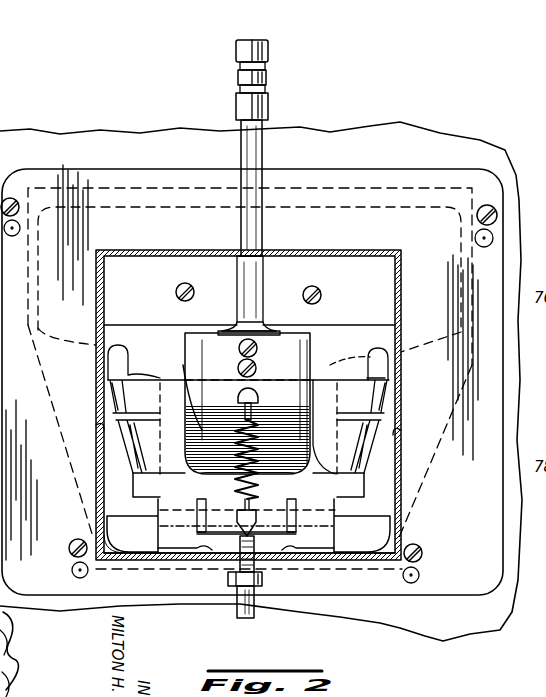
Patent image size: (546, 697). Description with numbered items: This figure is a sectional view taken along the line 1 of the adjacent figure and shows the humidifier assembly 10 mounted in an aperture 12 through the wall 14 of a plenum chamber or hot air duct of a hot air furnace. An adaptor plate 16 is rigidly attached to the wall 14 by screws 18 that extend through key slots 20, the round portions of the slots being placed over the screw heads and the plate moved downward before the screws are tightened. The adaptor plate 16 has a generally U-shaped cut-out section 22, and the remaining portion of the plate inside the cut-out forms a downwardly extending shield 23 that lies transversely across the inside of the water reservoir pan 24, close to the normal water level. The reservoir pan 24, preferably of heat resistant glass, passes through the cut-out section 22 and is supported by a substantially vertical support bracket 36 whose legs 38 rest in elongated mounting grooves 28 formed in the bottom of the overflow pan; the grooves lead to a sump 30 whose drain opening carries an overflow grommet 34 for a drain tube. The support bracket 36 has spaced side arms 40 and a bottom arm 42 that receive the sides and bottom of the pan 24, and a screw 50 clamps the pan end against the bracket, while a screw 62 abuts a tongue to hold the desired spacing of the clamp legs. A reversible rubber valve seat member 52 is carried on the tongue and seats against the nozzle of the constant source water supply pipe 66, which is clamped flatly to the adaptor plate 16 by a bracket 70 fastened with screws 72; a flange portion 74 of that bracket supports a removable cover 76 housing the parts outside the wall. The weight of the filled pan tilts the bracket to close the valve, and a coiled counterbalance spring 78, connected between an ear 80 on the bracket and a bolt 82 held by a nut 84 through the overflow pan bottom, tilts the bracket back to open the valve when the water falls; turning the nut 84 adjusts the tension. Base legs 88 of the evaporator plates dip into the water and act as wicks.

The section line 1 is at (237, 27).
The humidifier assembly 10 is at (357, 168).
The aperture 12 is at (420, 455).
The wall 14 is at (458, 642).
The adaptor plate 16 is at (464, 588).
The screws 18 is at (12, 198).
The key slots 20 is at (11, 237).
The cut-out section 22 is at (125, 362).
The shield 23 is at (247, 439).
The water reservoir pan 24 is at (108, 399).
The mounting grooves 28 is at (195, 562).
The sump 30 is at (264, 530).
The overflow grommet 34 is at (255, 607).
The support bracket 36 is at (195, 364).
The legs 38 is at (160, 538).
The side arms 40 is at (133, 487).
The bottom arm 42 is at (285, 540).
The screw 50 is at (257, 368).
The valve seat member 52 is at (233, 326).
The screw 62 is at (240, 352).
The water supply pipe 66 is at (262, 151).
The bracket 70 is at (334, 328).
The screws 72 is at (176, 292).
The flange portion 74 is at (328, 264).
The removable cover 76 is at (97, 303).
The counterbalance spring 78 is at (260, 463).
The ear 80 is at (259, 400).
The bolt 82 is at (208, 549).
The nut 84 is at (227, 577).
The base leg 88 is at (193, 500).